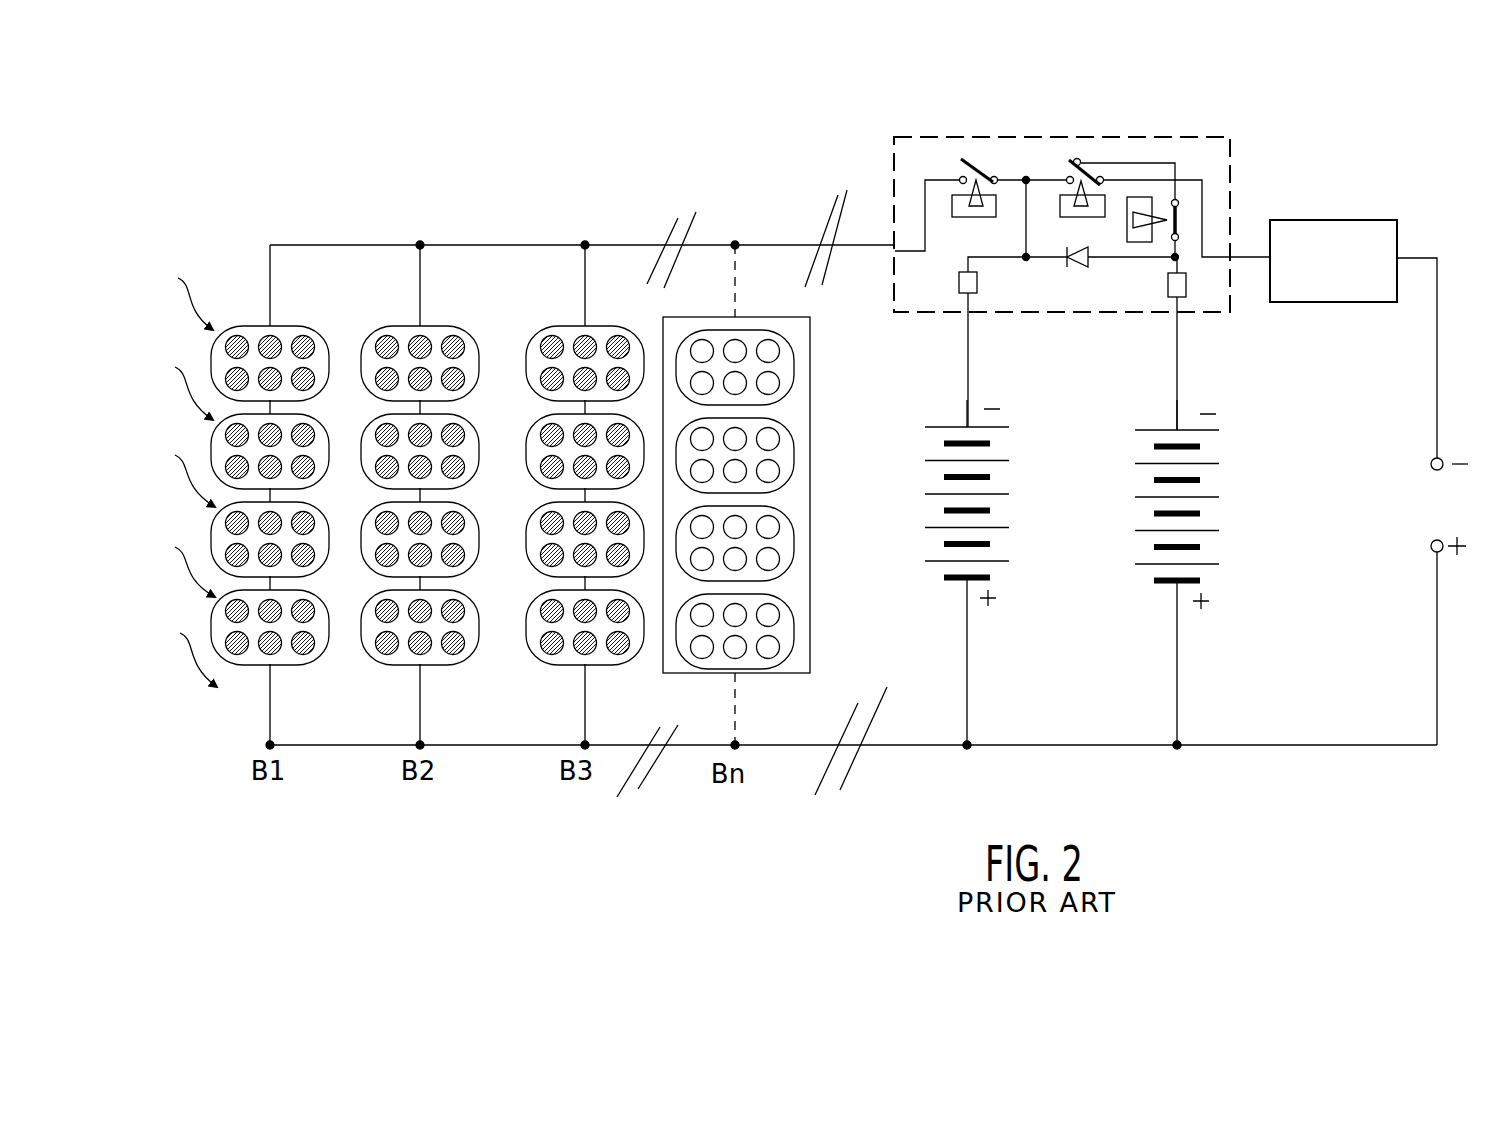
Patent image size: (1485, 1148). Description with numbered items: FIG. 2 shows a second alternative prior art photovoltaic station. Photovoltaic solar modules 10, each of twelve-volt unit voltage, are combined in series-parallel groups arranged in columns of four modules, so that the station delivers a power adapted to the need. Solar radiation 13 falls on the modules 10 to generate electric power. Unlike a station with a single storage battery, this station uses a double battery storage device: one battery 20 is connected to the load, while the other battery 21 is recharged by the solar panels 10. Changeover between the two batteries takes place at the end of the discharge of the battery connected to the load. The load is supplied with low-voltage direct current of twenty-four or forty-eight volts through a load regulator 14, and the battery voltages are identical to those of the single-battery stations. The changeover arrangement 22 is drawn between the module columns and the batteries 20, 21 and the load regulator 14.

The photovoltaic solar module 10 is at (292, 332).
The solar radiation 13 is at (201, 298).
The load regulator 14 is at (1350, 222).
The battery 20 is at (1018, 548).
The battery 21 is at (1228, 548).
The charge control circuit 22 is at (893, 150).